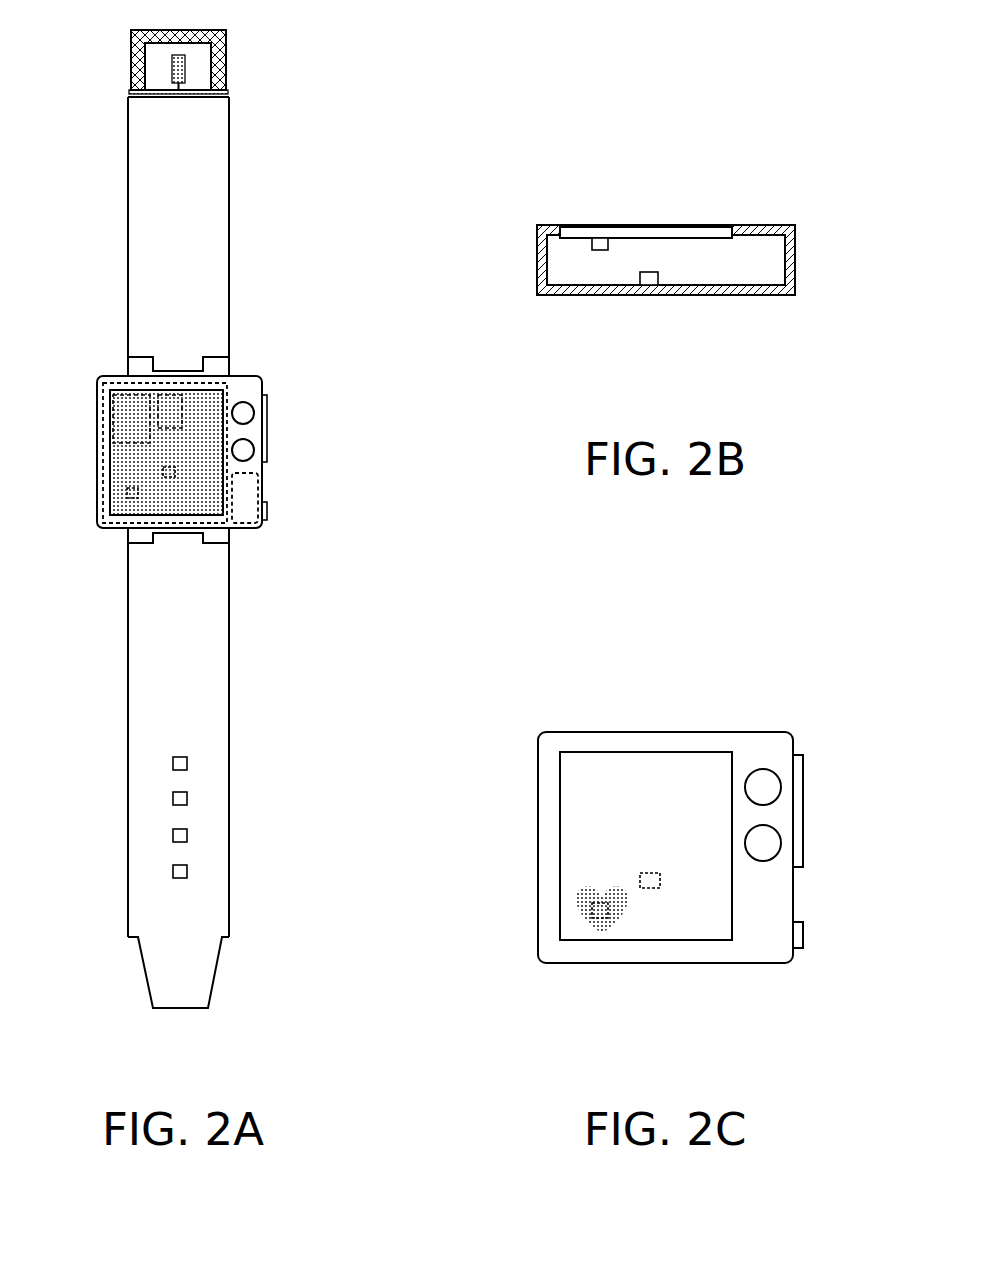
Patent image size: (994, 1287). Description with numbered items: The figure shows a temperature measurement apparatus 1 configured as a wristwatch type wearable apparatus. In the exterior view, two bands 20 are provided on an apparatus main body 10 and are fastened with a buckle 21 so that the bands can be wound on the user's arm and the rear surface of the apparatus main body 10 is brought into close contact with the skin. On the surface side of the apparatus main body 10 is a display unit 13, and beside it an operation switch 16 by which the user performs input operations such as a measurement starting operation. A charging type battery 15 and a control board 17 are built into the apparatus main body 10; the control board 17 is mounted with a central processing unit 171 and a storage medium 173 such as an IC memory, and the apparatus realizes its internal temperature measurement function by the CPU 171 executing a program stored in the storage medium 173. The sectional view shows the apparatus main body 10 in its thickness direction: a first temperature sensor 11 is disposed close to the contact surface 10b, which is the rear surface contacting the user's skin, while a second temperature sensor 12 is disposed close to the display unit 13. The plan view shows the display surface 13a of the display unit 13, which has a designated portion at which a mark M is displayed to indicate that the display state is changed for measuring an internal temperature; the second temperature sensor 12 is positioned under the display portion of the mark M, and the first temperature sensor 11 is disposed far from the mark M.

In FIG. 2A, the temperature measurement apparatus 1 is at (290, 117).
In FIG. 2A, the apparatus main body 10 is at (247, 375).
In FIG. 2B, the apparatus main body 10 is at (778, 227).
In FIG. 2C, the apparatus main body 10 is at (758, 735).
In FIG. 2B, the contact surface 10b is at (712, 295).
In FIG. 2A, the first temperature sensor 11 is at (172, 472).
In FIG. 2B, the first temperature sensor 11 is at (647, 283).
In FIG. 2C, the first temperature sensor 11 is at (650, 888).
In FIG. 2A, the second temperature sensor 12 is at (130, 497).
In FIG. 2B, the second temperature sensor 12 is at (592, 245).
In FIG. 2C, the second temperature sensor 12 is at (598, 920).
In FIG. 2A, the display unit 13 is at (118, 475).
In FIG. 2B, the display unit 13 is at (701, 230).
In FIG. 2B, the display surface 13a is at (615, 221).
In FIG. 2C, the display surface 13a is at (578, 812).
In FIG. 2A, the charging type battery 15 is at (260, 490).
In FIG. 2A, the operation switch 16 is at (254, 414).
In FIG. 2A, the control board 17 is at (107, 438).
In FIG. 2A, the central processing unit (CPU) 171 is at (112, 402).
In FIG. 2A, the storage medium 173 is at (163, 397).
In FIG. 2A, the band 20 is at (137, 138).
In FIG. 2A, the buckle 21 is at (137, 53).
In FIG. 2C, the mark M is at (577, 902).